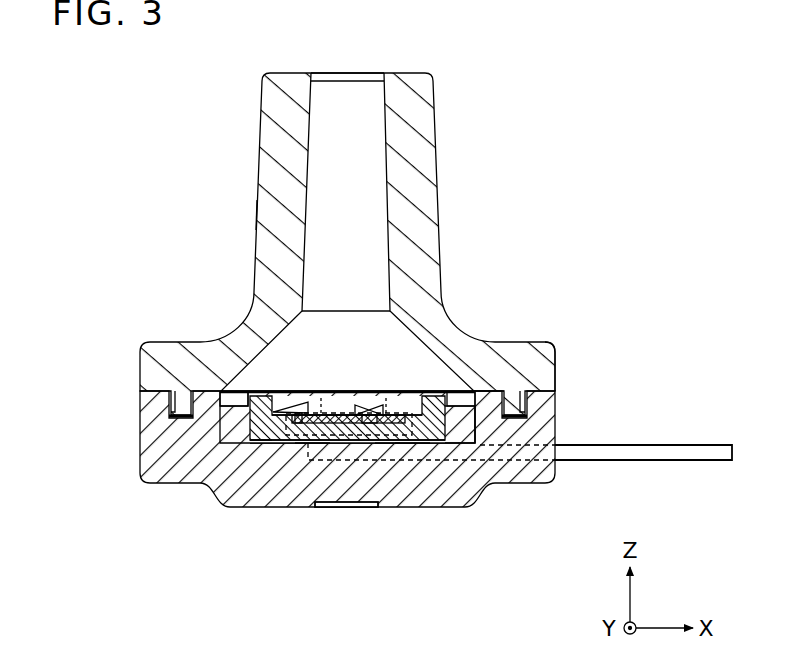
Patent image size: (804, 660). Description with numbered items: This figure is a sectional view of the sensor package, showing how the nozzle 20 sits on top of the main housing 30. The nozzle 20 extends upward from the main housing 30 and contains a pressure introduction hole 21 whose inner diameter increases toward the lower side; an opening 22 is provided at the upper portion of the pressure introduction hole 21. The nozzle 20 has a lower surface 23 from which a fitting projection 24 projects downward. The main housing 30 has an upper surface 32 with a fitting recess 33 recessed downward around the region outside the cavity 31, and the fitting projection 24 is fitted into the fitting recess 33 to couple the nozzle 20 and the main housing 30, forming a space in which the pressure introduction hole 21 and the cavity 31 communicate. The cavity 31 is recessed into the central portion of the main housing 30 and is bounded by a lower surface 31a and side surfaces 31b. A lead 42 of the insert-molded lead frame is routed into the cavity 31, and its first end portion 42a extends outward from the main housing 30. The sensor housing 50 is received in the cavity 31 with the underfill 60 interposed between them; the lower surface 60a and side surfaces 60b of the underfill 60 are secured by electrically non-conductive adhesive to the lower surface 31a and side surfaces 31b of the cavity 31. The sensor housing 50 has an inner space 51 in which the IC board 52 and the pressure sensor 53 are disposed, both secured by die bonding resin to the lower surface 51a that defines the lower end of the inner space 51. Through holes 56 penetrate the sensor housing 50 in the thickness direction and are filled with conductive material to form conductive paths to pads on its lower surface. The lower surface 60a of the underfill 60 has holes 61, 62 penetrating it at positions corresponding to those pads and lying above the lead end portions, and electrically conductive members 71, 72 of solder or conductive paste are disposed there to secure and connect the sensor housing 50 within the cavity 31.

The nozzle 20 is at (467, 148).
The pressure introduction hole 21 is at (310, 213).
The opening 22 is at (372, 78).
The lower surface 23 is at (512, 399).
The fitting projection 24 is at (182, 405).
The main housing 30 is at (352, 458).
The cavity 31 is at (208, 478).
The lower surface 31a is at (473, 432).
The side surfaces 31b is at (473, 415).
The upper surface 32 is at (537, 388).
The fitting recess 33 is at (173, 410).
The lead 42 is at (665, 455).
The first end portion 42a is at (703, 444).
The sensor housing 50 is at (281, 456).
The inner space 51 is at (280, 396).
The lower surface 51a is at (420, 396).
The IC board 52 is at (340, 396).
The pressure sensor 53 is at (398, 396).
The through holes 56 is at (321, 398).
The underfill 60 is at (236, 445).
The lower surface 60a is at (262, 445).
The side surfaces 60b is at (226, 432).
The hole 61 is at (310, 445).
The hole 62 is at (412, 445).
The electrically conductive member 71 is at (342, 507).
The electrically conductive member 72 is at (390, 445).